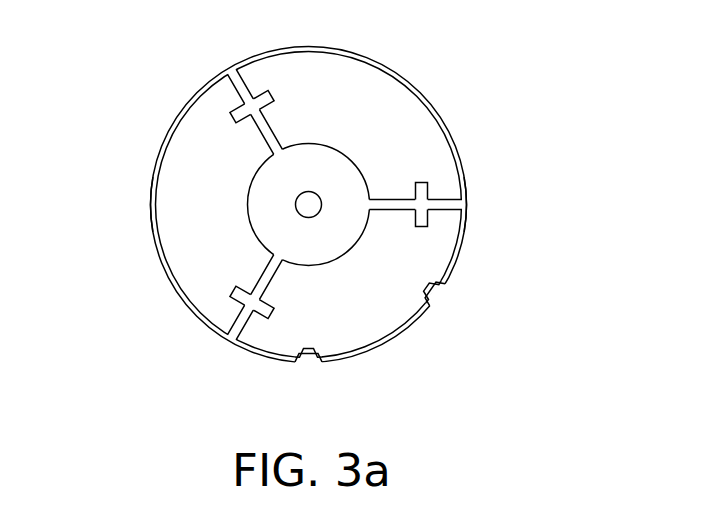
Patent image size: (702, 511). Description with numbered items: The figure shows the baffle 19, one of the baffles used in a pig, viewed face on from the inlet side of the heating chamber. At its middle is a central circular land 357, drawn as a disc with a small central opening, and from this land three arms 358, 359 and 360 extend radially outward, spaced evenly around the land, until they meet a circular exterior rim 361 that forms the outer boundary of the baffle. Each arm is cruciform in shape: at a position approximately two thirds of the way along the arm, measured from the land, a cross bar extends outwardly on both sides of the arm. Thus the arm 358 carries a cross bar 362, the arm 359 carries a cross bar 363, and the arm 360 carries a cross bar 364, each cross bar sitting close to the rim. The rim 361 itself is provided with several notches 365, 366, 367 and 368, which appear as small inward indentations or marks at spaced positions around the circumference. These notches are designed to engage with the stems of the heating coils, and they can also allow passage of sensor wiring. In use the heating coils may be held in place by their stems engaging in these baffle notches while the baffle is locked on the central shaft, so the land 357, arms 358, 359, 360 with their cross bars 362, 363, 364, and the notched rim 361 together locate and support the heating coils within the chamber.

The baffle 19 is at (377, 348).
The central circular land 357 is at (323, 243).
The arm 358 is at (221, 114).
The arm 359 is at (448, 187).
The arm 360 is at (222, 295).
The circular exterior rim 361 is at (410, 82).
The cross bar 362 is at (273, 132).
The cross bar 363 is at (422, 205).
The cross bar 364 is at (277, 292).
The notch 365 is at (311, 360).
The notch 366 is at (433, 293).
The notch 367 is at (152, 204).
The notch 368 is at (466, 203).